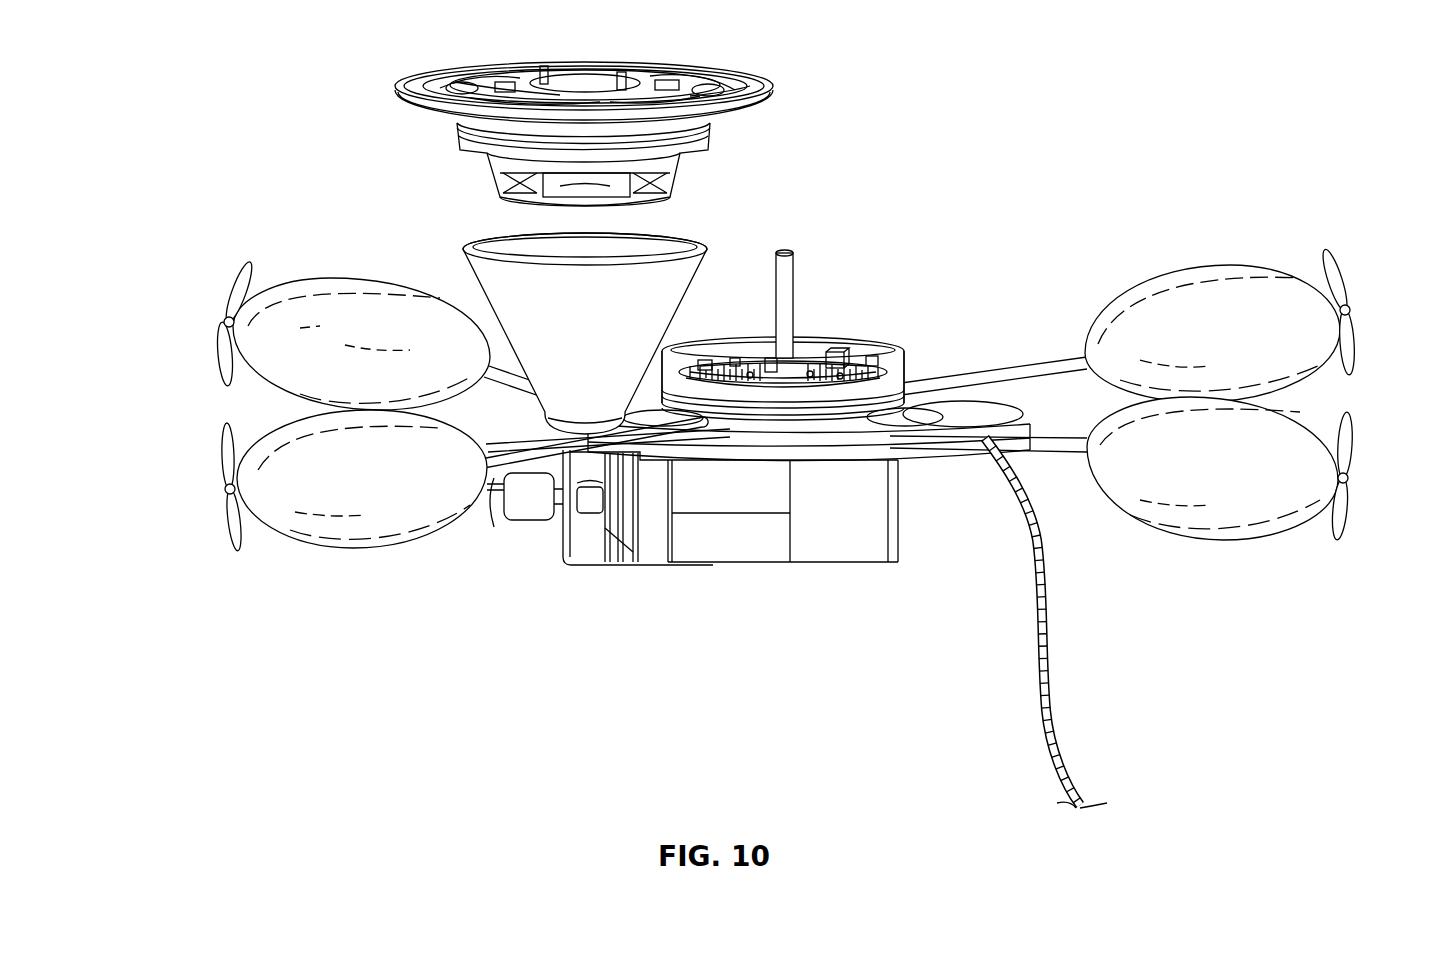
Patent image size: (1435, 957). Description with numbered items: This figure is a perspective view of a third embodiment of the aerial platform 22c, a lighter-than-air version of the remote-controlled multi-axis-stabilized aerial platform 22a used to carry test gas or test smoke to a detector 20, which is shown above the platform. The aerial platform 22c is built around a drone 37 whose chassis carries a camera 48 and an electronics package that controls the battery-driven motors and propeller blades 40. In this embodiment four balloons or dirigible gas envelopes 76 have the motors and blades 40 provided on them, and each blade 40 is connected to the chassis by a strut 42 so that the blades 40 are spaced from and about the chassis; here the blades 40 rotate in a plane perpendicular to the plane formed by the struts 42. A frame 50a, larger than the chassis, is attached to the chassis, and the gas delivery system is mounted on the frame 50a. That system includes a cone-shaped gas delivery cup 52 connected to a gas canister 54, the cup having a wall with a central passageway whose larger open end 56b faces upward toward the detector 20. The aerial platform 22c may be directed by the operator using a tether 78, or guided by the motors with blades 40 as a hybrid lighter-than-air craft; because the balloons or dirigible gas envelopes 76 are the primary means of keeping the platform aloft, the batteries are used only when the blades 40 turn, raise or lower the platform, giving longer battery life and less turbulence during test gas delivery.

The detector 20 is at (722, 130).
The aerial platform 22a is at (913, 322).
The aerial platform 22c is at (637, 628).
The drone 37 is at (866, 320).
The propeller blades 40 is at (248, 262).
The strut 42 is at (967, 375).
The camera 48 is at (793, 274).
The frame 50a is at (958, 455).
The gas delivery cup 52 is at (668, 307).
The gas canister 54 is at (848, 540).
The larger open end 56b is at (512, 258).
The balloons or dirigible gas envelopes 76 is at (272, 371).
The tether 78 is at (1050, 693).